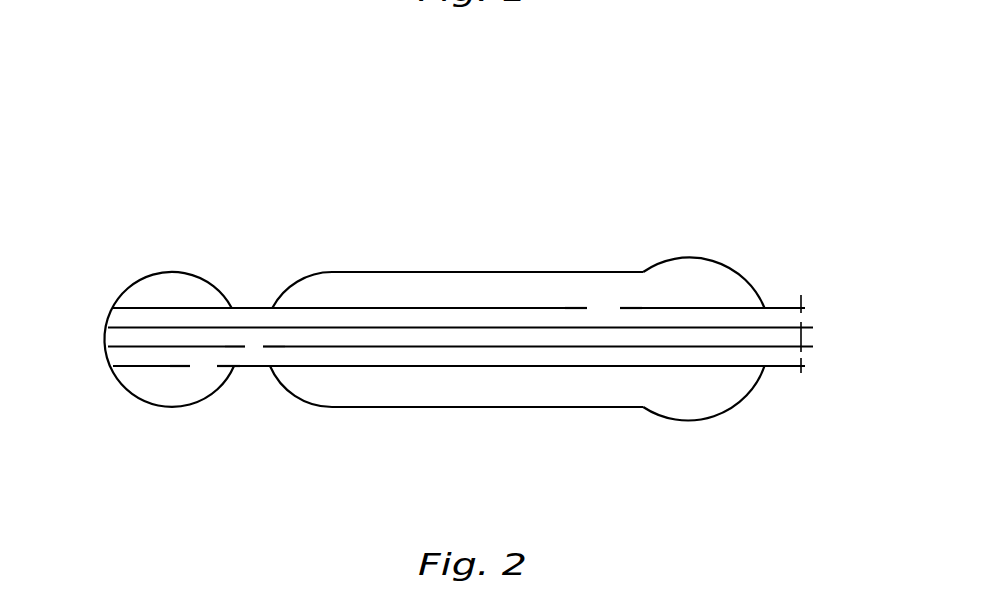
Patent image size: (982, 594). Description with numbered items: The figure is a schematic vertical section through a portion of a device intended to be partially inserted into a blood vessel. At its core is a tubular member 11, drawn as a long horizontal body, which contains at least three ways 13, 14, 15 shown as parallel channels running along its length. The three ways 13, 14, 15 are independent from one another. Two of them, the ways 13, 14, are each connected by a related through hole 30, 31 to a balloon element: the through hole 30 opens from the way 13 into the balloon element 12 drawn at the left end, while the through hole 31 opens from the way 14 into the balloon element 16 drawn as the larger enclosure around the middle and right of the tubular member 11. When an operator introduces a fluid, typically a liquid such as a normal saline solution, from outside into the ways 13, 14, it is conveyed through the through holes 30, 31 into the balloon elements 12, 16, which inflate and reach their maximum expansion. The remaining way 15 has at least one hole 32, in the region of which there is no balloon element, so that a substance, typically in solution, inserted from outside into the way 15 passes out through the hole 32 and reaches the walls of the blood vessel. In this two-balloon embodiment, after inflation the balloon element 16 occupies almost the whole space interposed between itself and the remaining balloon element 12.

The tubular member 11 is at (362, 288).
The balloon element 12 is at (128, 288).
The way 13 is at (417, 357).
The way 14 is at (452, 312).
The way 15 is at (510, 335).
The balloon element 16 is at (578, 282).
The through hole 30 is at (205, 363).
The through hole 31 is at (605, 307).
The hole 32 is at (255, 345).